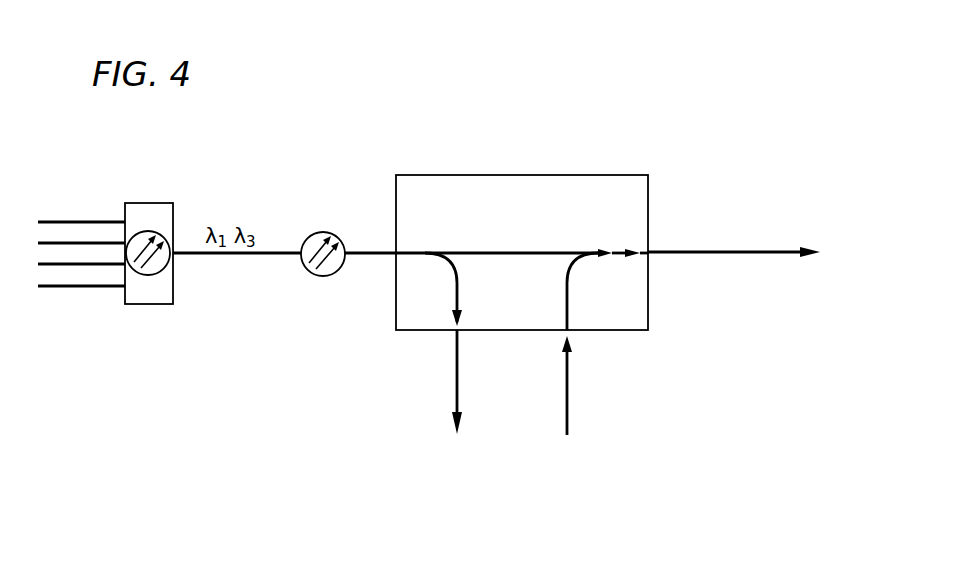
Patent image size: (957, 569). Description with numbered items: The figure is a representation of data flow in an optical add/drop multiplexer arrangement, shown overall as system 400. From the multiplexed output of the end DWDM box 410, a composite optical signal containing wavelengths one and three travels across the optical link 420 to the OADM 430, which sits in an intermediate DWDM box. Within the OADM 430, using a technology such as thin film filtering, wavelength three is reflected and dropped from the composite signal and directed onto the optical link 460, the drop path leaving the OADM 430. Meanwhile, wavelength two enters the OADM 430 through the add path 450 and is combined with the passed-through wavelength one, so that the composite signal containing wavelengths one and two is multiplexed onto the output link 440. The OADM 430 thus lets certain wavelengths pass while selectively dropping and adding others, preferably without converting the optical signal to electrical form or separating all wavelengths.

The optical communication system 400 is at (241, 163).
The end DWDM box 410 is at (150, 203).
The optical link 420 is at (322, 231).
The OADM 430 is at (512, 175).
The link 440 is at (783, 250).
The add port 450 is at (570, 389).
The optical link 460 is at (455, 385).